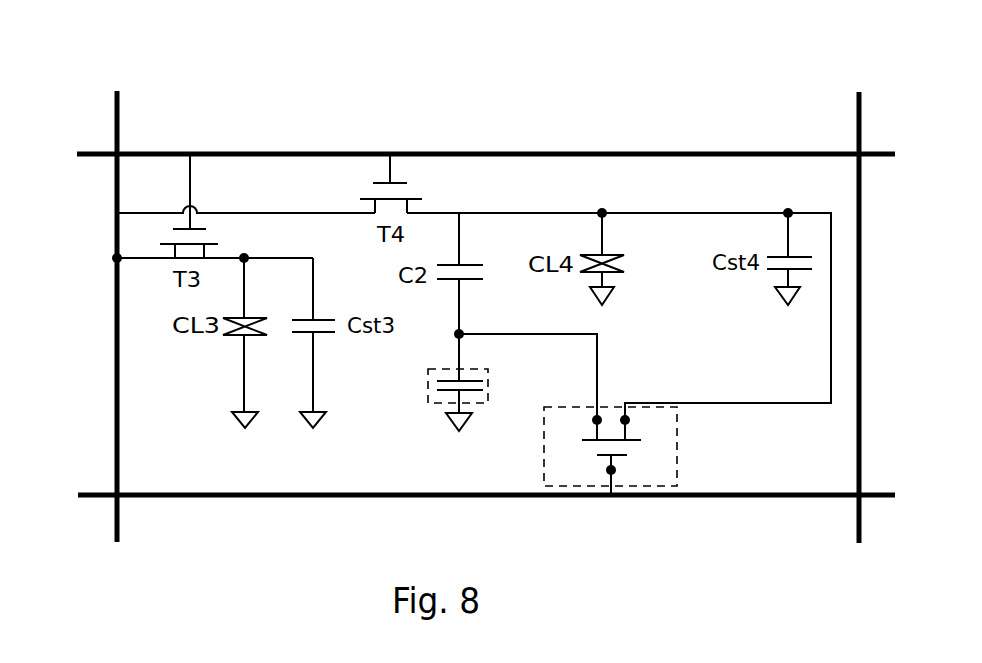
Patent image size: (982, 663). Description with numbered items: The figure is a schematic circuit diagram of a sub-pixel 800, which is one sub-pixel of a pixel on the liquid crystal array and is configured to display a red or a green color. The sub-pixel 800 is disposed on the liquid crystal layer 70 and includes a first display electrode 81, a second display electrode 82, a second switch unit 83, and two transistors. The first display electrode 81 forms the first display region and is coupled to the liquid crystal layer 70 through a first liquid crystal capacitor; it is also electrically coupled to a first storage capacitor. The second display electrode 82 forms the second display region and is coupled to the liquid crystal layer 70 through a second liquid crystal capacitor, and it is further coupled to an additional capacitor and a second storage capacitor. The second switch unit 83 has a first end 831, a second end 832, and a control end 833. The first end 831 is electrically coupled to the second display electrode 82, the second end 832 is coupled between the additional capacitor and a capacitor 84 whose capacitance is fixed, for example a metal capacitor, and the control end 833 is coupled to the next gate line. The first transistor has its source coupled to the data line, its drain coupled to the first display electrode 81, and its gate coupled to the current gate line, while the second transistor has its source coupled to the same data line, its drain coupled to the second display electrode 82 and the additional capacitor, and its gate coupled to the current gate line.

The sub-pixel 800 is at (146, 34).
The first display electrode 81 is at (258, 245).
The second display electrode 82 is at (605, 199).
The liquid crystal layer 70 is at (516, 372).
The capacitor 84 is at (428, 397).
The second switch unit 83 is at (588, 474).
The first end 831 is at (645, 422).
The second end 832 is at (576, 422).
The control end 833 is at (630, 470).